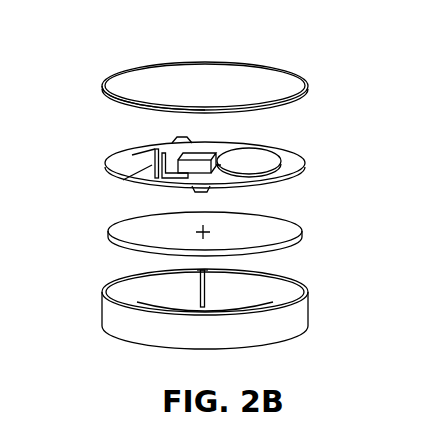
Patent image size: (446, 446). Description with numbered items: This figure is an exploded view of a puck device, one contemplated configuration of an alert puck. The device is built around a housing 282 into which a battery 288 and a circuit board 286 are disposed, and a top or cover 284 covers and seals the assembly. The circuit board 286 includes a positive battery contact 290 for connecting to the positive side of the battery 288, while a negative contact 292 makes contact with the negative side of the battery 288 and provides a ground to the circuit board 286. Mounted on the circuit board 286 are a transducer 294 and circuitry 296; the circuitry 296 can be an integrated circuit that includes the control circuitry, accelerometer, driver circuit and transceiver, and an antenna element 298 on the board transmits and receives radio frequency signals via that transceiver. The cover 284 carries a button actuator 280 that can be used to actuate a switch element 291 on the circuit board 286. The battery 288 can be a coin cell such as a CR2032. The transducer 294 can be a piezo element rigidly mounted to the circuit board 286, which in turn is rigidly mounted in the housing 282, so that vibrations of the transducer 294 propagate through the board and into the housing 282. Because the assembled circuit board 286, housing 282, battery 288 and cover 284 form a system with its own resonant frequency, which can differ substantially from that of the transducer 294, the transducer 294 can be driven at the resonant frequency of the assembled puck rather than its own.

The button actuator 280 is at (251, 78).
The cover 284 is at (102, 91).
The circuit board 286 is at (108, 165).
The switch element 291 is at (186, 141).
The positive battery contact 290 is at (210, 191).
The antenna element 298 is at (123, 180).
The circuitry 296 is at (240, 145).
The transducer 294 is at (265, 162).
The battery 288 is at (303, 238).
The housing 282 is at (102, 313).
The negative contact 292 is at (207, 293).